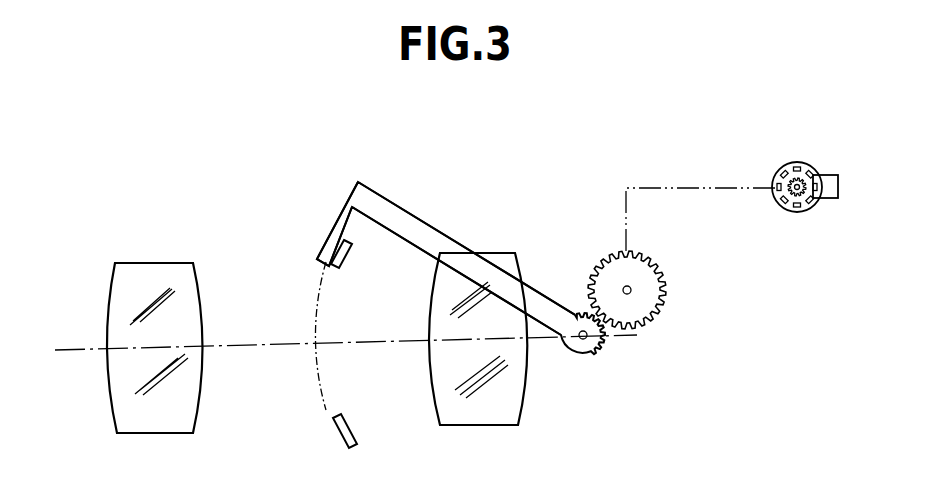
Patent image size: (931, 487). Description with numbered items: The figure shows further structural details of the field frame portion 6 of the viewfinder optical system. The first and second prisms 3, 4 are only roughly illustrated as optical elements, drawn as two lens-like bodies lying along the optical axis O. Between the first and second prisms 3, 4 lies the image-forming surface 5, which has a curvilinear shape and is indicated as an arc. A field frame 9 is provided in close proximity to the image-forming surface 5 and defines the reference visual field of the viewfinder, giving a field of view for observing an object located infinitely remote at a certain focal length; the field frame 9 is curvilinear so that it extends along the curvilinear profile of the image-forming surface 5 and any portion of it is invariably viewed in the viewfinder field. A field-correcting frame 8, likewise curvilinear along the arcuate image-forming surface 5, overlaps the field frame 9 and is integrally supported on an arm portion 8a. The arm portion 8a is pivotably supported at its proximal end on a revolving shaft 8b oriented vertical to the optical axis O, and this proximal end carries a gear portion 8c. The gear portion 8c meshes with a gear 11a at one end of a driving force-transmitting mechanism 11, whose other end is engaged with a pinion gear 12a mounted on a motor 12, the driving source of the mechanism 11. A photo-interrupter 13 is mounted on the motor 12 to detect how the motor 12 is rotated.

The optical axis O is at (83, 347).
The first prism 3 is at (505, 425).
The second prism 4 is at (203, 397).
The image-forming surface 5 is at (325, 400).
The field frame portion 6 is at (349, 181).
The field-correcting frame 8 is at (325, 240).
The arm portion 8a is at (422, 222).
The revolving shaft 8b is at (580, 340).
The gear portion 8c is at (608, 347).
The field frame 9 is at (348, 255).
The driving force-transmitting mechanism 11 is at (695, 187).
The gear 11a is at (603, 262).
The motor 12 is at (800, 215).
The pinion gear 12a is at (797, 162).
The photo-interrupter 13 is at (827, 175).